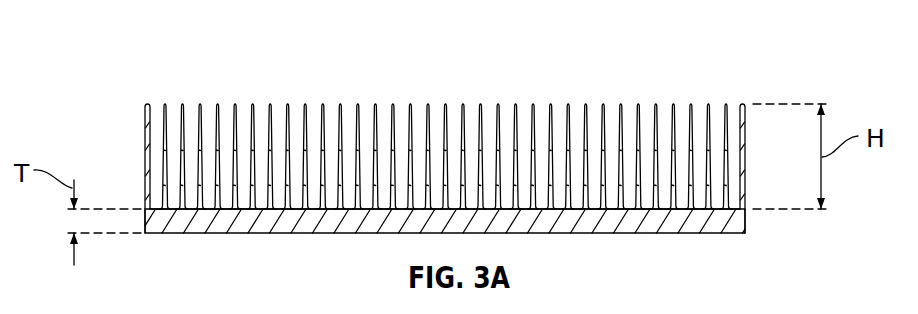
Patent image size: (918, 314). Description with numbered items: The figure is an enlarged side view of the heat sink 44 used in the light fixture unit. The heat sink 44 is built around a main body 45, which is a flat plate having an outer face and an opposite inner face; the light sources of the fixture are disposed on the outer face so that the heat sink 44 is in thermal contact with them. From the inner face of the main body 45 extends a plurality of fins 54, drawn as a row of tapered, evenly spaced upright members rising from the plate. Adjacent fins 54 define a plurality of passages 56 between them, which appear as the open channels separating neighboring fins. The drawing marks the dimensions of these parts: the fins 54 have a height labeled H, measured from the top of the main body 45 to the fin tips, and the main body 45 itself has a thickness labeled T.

The heat sink 44 is at (149, 82).
The main body 45 is at (205, 222).
The fins 54 is at (483, 124).
The passages 56 is at (730, 112).